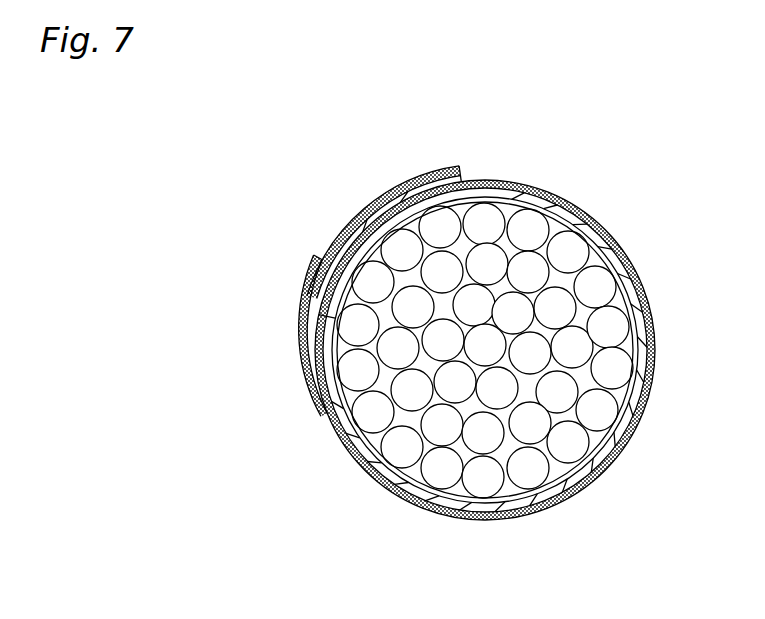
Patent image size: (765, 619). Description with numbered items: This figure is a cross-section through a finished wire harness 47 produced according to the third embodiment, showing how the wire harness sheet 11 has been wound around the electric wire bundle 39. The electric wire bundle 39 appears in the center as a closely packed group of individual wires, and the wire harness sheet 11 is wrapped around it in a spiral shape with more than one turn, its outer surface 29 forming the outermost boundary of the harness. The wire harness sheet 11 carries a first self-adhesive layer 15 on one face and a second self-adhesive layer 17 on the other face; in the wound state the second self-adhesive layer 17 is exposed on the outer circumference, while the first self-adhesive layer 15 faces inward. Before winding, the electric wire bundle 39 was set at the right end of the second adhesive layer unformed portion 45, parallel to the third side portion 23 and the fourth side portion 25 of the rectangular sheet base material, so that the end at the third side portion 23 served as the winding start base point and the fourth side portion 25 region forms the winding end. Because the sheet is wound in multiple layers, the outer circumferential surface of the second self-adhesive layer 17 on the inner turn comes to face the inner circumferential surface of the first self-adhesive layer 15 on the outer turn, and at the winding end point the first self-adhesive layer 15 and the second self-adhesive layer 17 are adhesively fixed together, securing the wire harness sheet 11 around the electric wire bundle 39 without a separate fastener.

The wire harness sheet 11 is at (454, 339).
The first self-adhesive layer 15 is at (391, 205).
The second self-adhesive layer 17 is at (549, 507).
The third side portion 23 is at (312, 320).
The fourth side portion 25 is at (466, 163).
The outer surface of tape 29 is at (347, 219).
The electric wire bundle 39 is at (484, 482).
The second adhesive layer unformed portion 45 is at (330, 375).
The wire harness 47 is at (616, 215).